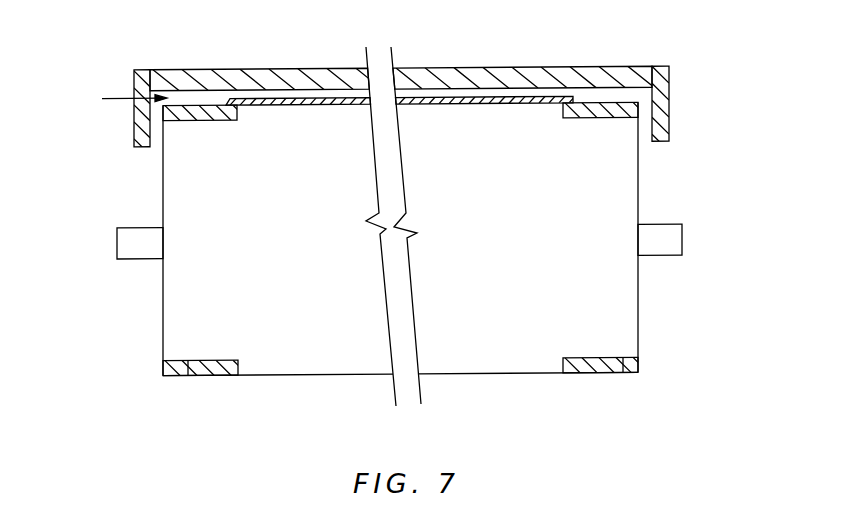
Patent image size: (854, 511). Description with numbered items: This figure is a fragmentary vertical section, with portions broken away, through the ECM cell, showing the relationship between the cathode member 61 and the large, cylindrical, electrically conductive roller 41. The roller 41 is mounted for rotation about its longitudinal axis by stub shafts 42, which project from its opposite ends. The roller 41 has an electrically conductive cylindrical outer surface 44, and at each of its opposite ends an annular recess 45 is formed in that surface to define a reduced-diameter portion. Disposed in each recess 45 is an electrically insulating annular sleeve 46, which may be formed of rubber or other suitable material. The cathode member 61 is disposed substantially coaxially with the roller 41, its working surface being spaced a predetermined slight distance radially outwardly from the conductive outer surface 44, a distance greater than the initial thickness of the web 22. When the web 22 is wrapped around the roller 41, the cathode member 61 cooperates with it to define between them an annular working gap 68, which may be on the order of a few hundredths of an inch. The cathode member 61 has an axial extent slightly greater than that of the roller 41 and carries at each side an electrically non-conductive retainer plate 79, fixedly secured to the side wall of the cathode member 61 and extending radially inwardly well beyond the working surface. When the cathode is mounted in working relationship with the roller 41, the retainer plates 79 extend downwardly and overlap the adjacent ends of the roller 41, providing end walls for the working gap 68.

The web 22 is at (478, 97).
The roller 41 is at (177, 340).
The stub shafts 42 is at (133, 237).
The cylindrical outer surface 44 is at (487, 375).
The annular recesses 45 is at (188, 376).
The annular sleeve 46 is at (210, 376).
The cathode member 61 is at (238, 69).
The annular working gap 68 is at (121, 101).
The retainer plate 79 is at (133, 88).